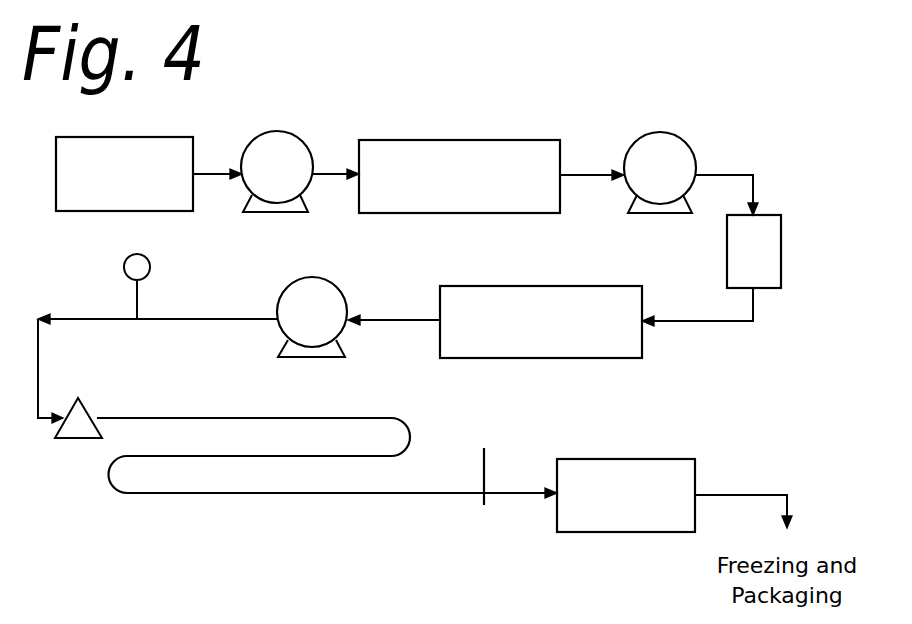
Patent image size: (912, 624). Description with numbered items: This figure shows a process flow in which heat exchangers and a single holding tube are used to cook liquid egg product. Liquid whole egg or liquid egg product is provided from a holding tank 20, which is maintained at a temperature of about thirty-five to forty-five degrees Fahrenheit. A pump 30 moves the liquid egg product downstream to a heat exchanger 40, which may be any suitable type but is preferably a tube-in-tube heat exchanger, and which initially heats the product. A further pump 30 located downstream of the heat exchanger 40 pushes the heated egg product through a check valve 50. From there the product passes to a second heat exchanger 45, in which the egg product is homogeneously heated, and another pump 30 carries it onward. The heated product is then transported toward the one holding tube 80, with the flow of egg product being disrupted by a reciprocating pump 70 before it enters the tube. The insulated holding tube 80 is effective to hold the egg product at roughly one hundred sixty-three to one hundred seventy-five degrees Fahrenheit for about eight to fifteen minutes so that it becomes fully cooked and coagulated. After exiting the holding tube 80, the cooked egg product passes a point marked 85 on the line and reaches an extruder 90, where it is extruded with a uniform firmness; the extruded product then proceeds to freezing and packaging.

The holding tank 20 is at (113, 185).
The pump 30 is at (265, 181).
The heat exchanger 40 is at (446, 184).
The heat exchanger 45 is at (528, 329).
The check valve 50 is at (741, 256).
The reciprocating pump 70 is at (78, 396).
The holding tube 80 is at (412, 428).
The cutter 85 is at (486, 468).
The extruder 90 is at (615, 504).